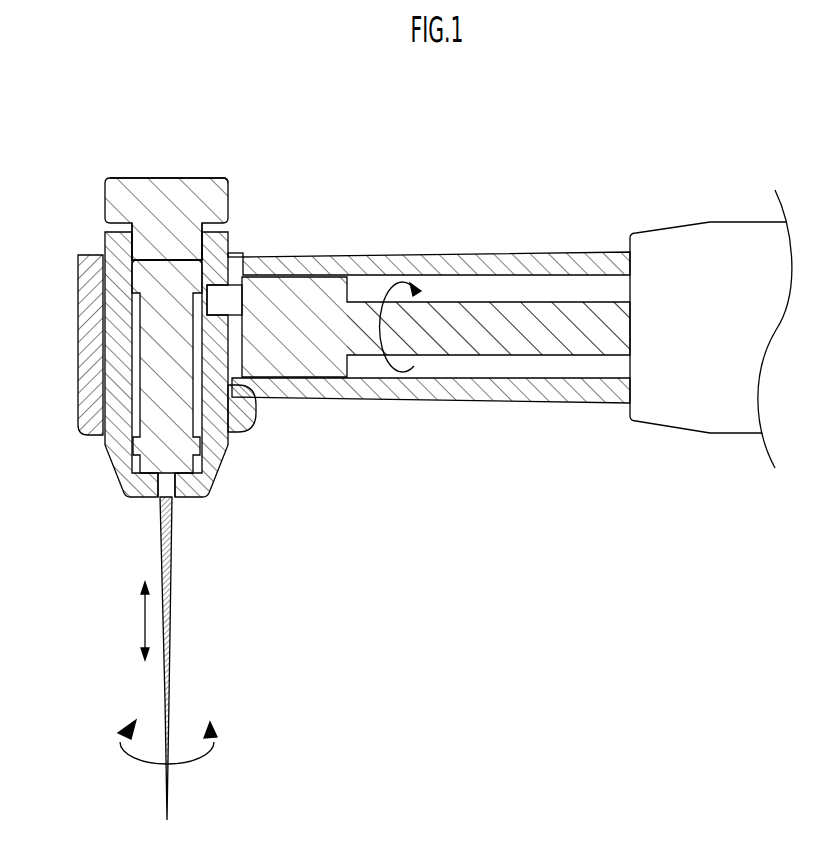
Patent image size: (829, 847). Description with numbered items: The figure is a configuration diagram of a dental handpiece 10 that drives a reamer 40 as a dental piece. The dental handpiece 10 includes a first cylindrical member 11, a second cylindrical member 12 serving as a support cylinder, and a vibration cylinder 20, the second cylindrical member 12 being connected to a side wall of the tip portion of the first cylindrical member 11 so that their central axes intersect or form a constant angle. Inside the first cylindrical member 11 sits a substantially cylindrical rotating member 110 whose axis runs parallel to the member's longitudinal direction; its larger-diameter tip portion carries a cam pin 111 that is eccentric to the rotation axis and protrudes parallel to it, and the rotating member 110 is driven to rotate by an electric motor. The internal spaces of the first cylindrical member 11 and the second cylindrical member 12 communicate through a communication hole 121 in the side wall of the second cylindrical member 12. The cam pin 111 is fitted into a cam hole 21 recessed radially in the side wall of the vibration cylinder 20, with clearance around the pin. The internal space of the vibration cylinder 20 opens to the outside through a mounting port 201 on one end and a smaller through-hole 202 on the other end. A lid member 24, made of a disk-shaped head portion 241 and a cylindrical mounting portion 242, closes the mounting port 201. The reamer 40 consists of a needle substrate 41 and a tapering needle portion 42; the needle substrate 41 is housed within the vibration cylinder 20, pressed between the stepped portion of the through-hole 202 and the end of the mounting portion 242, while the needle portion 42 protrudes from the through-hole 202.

The dental handpiece 10 is at (510, 258).
The first cylindrical member 11 is at (567, 253).
The rotating member 110 is at (557, 343).
The cam pin 111 is at (220, 302).
The second cylindrical member 12 is at (88, 420).
The communication hole 121 is at (236, 390).
The vibration cylinder 20 is at (131, 363).
The mounting port 201 is at (145, 237).
The through-hole 202 is at (169, 486).
The cam hole 21 is at (418, 334).
The lid member 24 is at (156, 154).
The head portion 241 is at (128, 182).
The mounting portion 242 is at (175, 235).
The reamer 40 is at (203, 658).
The needle substrate 41 is at (138, 338).
The needle portion 42 is at (132, 658).